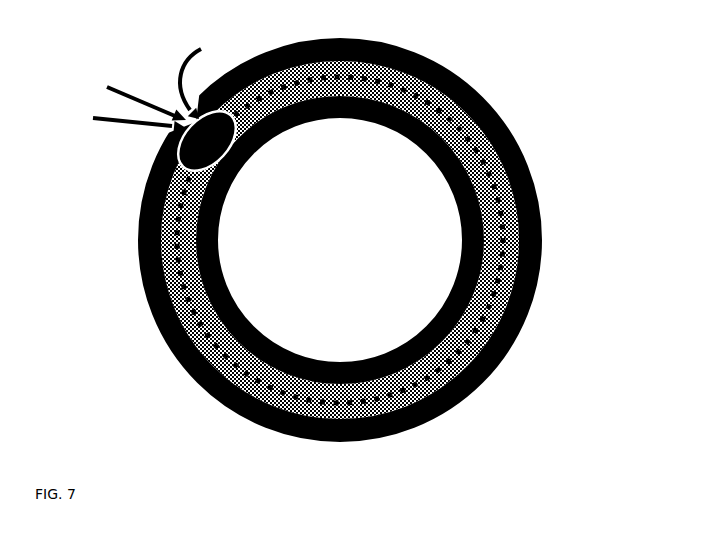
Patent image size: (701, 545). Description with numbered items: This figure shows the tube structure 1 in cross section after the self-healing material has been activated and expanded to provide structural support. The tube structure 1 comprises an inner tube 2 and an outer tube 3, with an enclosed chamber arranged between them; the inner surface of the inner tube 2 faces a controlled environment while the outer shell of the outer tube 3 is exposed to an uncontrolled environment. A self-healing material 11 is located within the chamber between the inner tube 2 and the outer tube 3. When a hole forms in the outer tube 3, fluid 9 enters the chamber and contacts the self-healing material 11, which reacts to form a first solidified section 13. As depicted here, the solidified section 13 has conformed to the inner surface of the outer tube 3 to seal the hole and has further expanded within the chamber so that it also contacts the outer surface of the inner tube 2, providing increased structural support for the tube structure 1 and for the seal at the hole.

The tube structure 1 is at (520, 33).
The inner tube 2 is at (253, 140).
The outer tube 3 is at (277, 42).
The fluid 9 is at (197, 47).
The self-healing material 11 is at (356, 80).
The first solidified section 13 is at (329, 240).